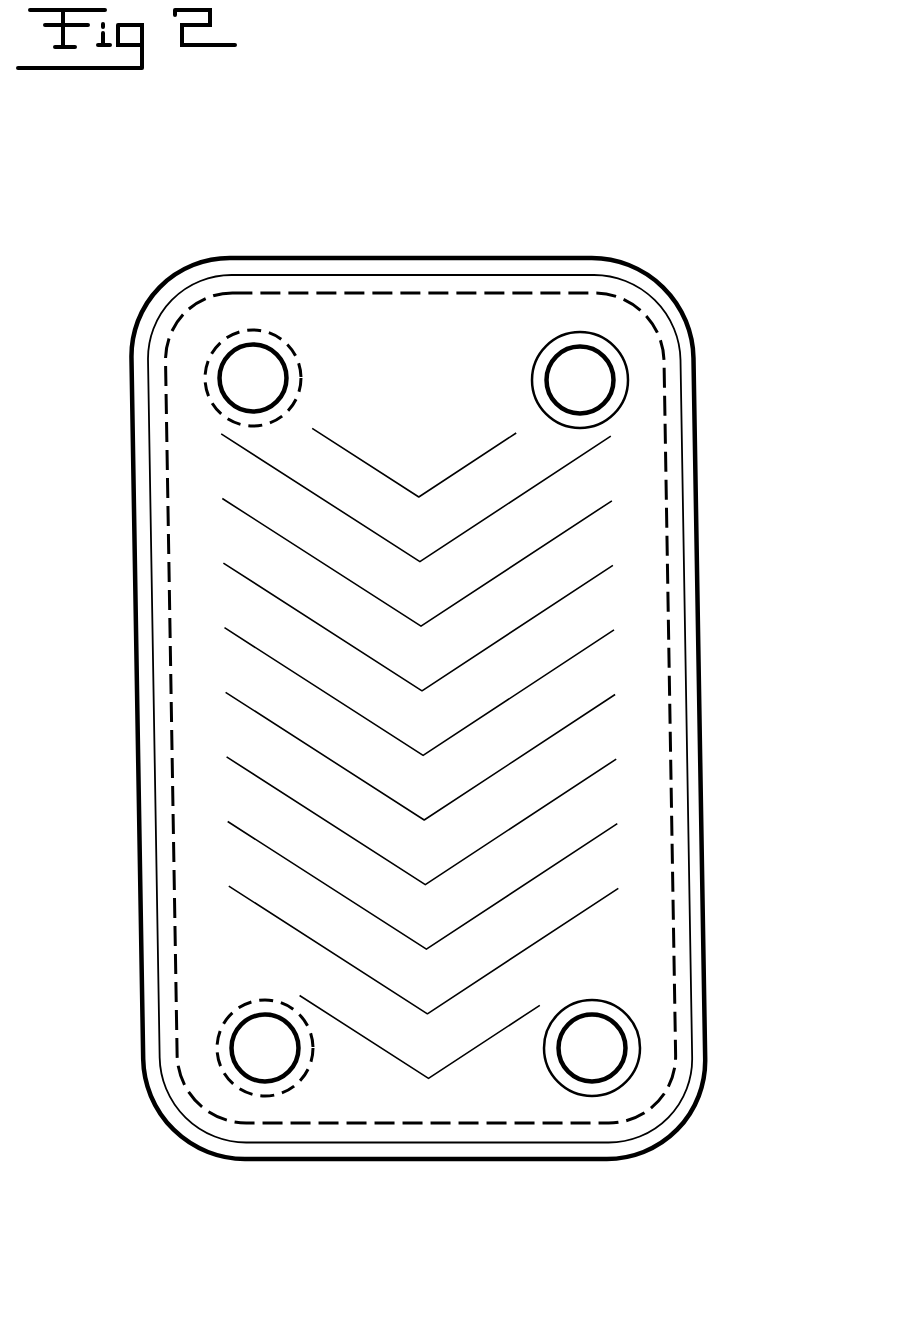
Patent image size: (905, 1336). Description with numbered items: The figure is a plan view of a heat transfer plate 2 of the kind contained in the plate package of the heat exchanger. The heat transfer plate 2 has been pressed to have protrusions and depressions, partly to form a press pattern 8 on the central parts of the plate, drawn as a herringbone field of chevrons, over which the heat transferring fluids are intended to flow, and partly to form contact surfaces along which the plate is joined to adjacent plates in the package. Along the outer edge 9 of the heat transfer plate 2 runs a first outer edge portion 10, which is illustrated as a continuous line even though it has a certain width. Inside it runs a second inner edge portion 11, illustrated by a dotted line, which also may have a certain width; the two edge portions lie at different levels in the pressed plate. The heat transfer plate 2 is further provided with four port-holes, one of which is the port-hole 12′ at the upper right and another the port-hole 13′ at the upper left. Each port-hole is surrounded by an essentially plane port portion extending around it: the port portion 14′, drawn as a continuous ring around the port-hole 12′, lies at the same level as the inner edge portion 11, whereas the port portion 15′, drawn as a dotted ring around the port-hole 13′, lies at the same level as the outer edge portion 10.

The heat transfer plate 2 is at (512, 164).
The press pattern 8 is at (493, 712).
The outer edge 9 is at (418, 708).
The first outer edge portion 10 is at (420, 709).
The second inner edge portion 11 is at (420, 708).
The port-hole 12′ is at (587, 368).
The port-hole 13′ is at (245, 372).
The port portion 14′ is at (630, 384).
The port portion 15′ is at (207, 373).